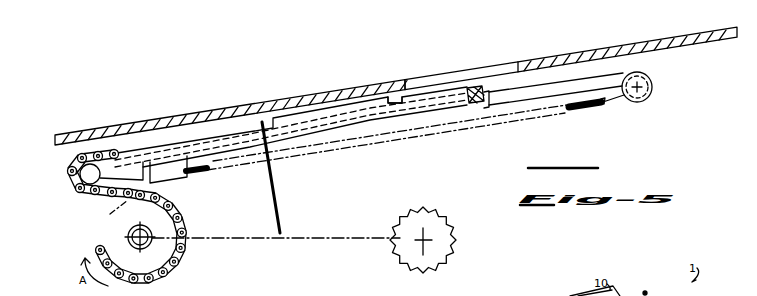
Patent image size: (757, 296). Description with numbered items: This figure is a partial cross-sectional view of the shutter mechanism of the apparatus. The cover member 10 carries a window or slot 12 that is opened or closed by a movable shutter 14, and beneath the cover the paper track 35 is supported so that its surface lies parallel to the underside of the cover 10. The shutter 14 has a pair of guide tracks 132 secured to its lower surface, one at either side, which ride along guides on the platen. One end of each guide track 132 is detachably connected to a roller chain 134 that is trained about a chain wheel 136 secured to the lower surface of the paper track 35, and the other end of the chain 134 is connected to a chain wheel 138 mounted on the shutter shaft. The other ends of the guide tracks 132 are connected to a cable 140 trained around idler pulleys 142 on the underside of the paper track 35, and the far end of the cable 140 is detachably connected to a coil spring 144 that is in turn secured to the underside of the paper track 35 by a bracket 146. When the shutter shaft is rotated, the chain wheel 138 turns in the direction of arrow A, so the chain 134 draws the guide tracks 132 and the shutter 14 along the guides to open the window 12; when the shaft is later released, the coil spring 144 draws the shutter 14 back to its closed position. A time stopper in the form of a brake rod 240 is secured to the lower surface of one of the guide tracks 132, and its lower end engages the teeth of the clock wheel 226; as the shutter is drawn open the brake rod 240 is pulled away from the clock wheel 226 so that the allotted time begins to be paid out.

The cover member 10 is at (612, 53).
The window or slot 12 is at (456, 75).
The movable shutter 14 is at (389, 97).
The paper track 35 is at (624, 76).
The guide tracks 132 is at (268, 127).
The roller chain 134 is at (68, 172).
The chain wheel 136 is at (84, 181).
The chain wheel 138 is at (106, 222).
The cable 140 is at (552, 86).
The idler pulleys 142 is at (644, 87).
The coil spring 144 is at (575, 110).
The bracket 146 is at (163, 164).
The clock wheel 226 is at (443, 222).
The brake rod 240 is at (273, 173).